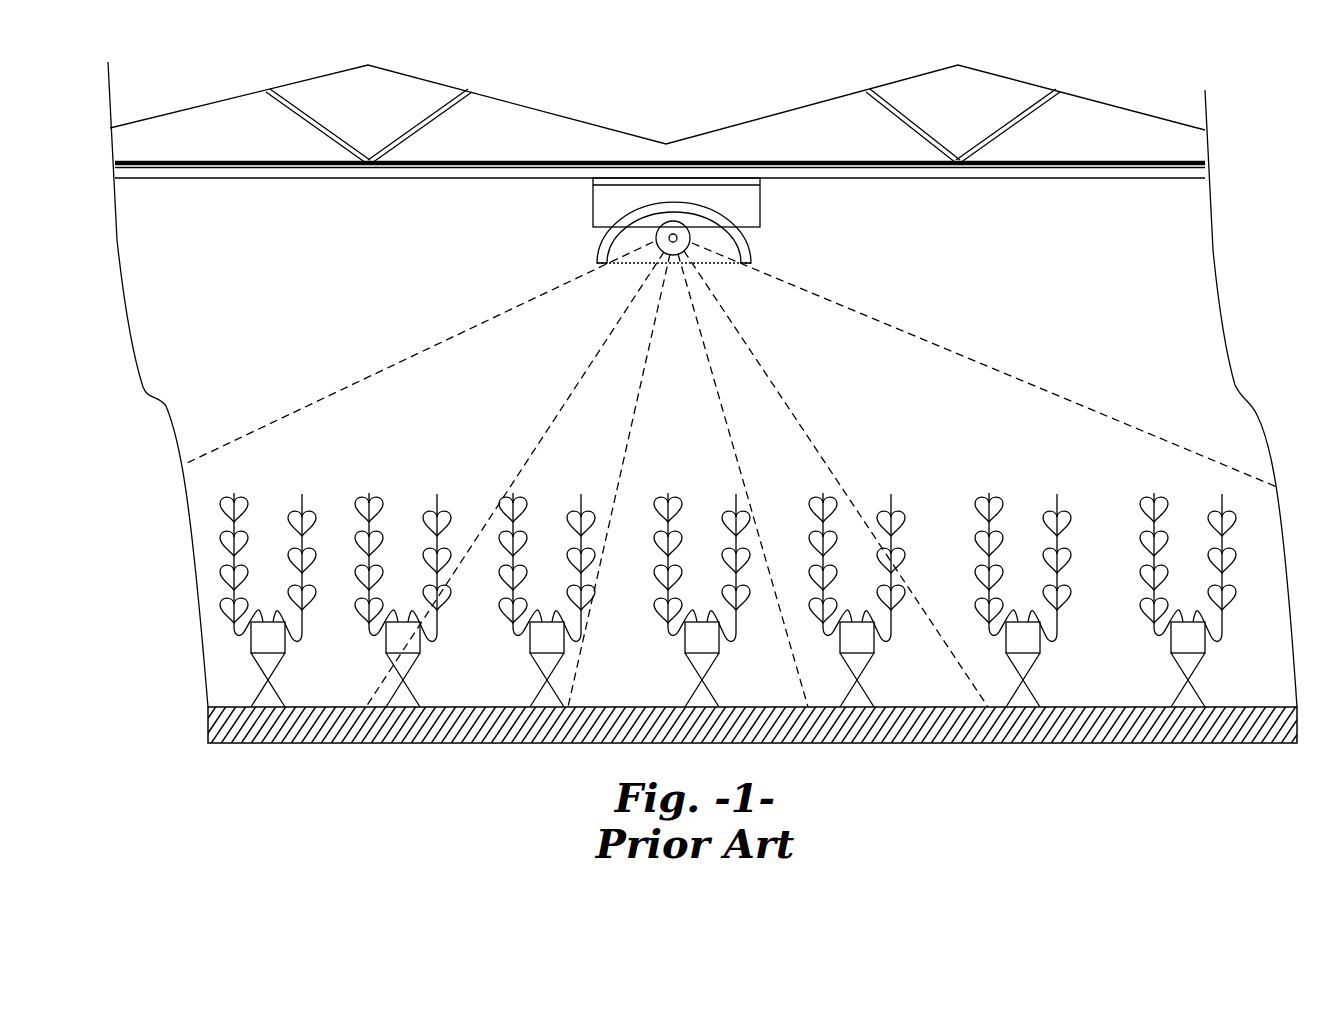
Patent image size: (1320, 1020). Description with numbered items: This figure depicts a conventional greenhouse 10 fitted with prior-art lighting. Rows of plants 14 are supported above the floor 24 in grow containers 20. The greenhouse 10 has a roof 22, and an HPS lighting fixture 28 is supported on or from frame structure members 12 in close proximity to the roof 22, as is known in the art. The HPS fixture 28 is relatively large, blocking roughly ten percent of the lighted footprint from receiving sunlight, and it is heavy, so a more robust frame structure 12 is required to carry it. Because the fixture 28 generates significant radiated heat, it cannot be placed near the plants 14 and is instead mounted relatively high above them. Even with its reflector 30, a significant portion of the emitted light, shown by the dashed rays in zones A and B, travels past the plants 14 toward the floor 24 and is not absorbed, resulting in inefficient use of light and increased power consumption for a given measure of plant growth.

The greenhouse 10 is at (1144, 100).
The frame structure members 12 is at (448, 114).
The plants 14 is at (1058, 535).
The grow containers 20 is at (1030, 643).
The roof 22 is at (752, 120).
The floor 24 is at (937, 743).
The HPS lighting fixture 28 is at (732, 442).
The reflector 30 is at (602, 247).